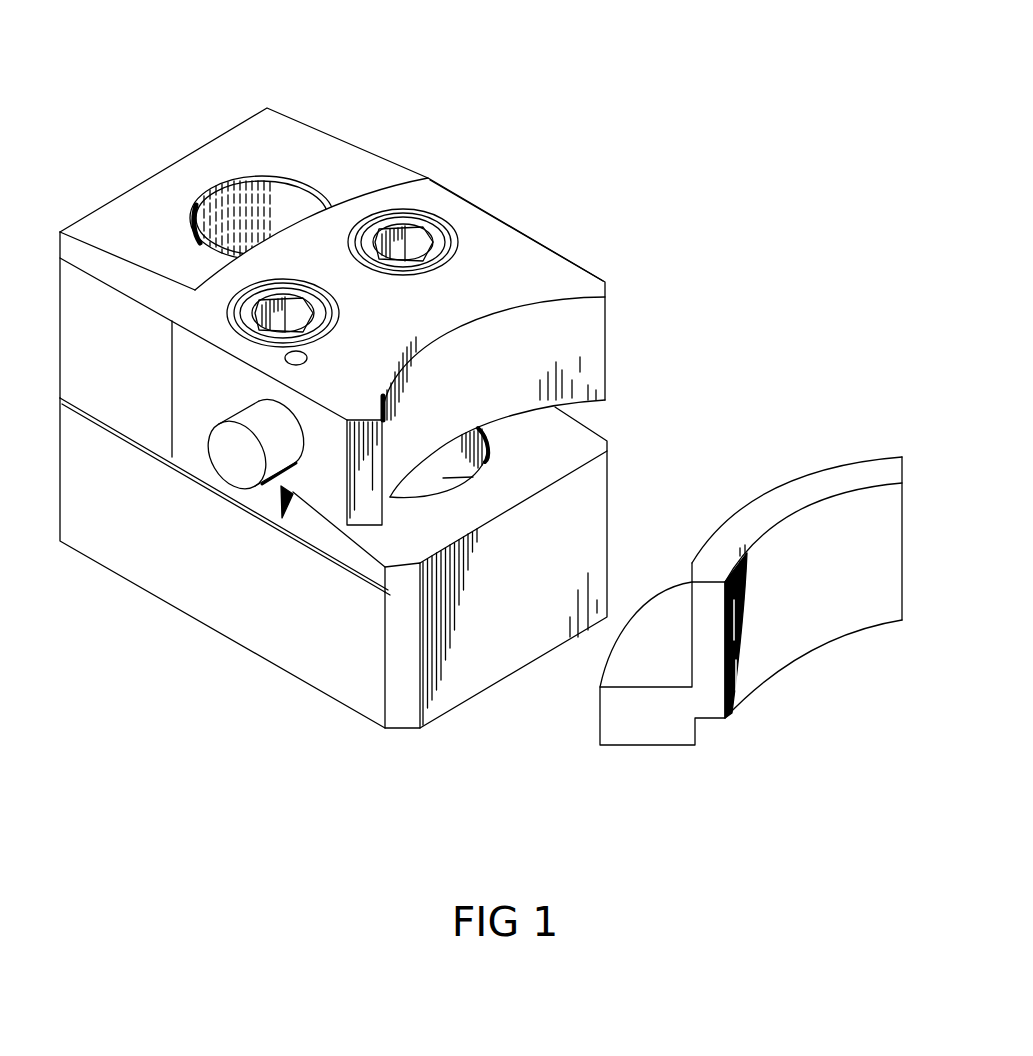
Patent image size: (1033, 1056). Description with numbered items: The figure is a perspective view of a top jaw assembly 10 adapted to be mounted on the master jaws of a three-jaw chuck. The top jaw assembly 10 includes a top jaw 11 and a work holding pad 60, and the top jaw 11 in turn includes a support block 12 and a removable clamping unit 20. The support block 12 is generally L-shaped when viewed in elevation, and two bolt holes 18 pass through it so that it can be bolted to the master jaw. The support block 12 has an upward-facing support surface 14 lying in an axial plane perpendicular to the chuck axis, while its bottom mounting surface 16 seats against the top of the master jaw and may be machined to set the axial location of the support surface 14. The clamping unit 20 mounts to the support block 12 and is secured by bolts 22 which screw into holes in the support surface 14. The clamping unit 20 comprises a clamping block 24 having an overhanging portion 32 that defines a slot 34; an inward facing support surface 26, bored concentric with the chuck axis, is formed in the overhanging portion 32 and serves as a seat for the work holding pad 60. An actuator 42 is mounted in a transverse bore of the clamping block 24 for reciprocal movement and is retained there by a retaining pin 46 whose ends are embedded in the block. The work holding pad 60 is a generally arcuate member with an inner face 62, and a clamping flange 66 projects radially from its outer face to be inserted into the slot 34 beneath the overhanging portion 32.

The top jaw assembly 10 is at (538, 157).
The top jaw 11 is at (178, 614).
The support block 12 is at (103, 221).
The support surface 14 is at (410, 545).
The mounting surface 16 is at (300, 622).
The bolt holes 18 is at (273, 200).
The clamping unit 20 is at (563, 255).
The bolts 22 is at (385, 203).
The clamping block 24 is at (198, 367).
The inward facing support surface 26 is at (575, 335).
The overhanging portion 32 is at (318, 482).
The slot 34 is at (588, 412).
The actuator 42 is at (233, 452).
The retaining pin 46 is at (285, 357).
The work holding pad 60 is at (825, 462).
The inner face 62 is at (833, 607).
The clamping flange 66 is at (627, 665).